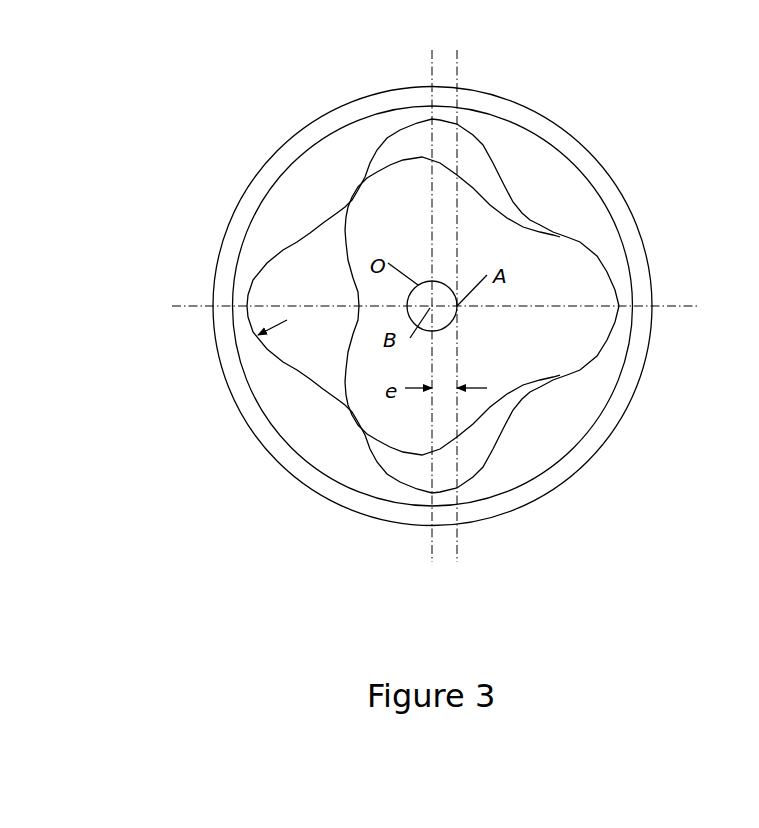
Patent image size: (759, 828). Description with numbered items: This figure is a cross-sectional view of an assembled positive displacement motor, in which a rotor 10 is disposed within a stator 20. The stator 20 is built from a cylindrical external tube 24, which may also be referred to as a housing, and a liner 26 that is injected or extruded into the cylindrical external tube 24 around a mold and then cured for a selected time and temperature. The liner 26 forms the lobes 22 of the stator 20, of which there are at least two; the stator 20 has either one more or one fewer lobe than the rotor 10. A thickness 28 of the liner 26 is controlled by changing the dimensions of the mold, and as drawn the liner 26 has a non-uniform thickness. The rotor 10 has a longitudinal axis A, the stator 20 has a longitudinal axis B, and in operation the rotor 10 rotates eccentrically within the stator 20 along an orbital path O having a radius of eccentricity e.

The rotor 10 is at (547, 357).
The stator 20 is at (603, 202).
The lobes 22 is at (303, 195).
The cylindrical external tube 24 is at (562, 138).
The liner 26 is at (598, 243).
The thickness 28 is at (237, 352).